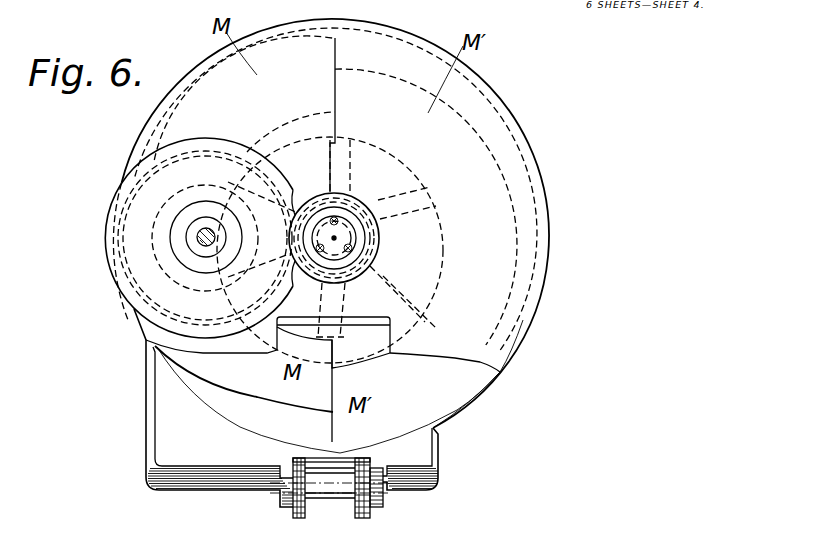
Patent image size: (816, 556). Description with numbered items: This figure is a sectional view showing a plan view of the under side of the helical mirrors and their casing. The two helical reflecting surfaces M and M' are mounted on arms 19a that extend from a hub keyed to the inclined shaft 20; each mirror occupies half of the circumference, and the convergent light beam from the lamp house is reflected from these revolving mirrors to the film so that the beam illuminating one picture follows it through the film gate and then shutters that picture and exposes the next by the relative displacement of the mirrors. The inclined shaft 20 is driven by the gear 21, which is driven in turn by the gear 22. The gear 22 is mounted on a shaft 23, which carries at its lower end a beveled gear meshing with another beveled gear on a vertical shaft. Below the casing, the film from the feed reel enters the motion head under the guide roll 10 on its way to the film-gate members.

The guide roll 10 is at (303, 519).
The arms 19a is at (403, 212).
The inclined shaft 20 is at (337, 234).
The gear 21 is at (320, 195).
The gear 22 is at (215, 153).
The shaft 23 is at (197, 235).